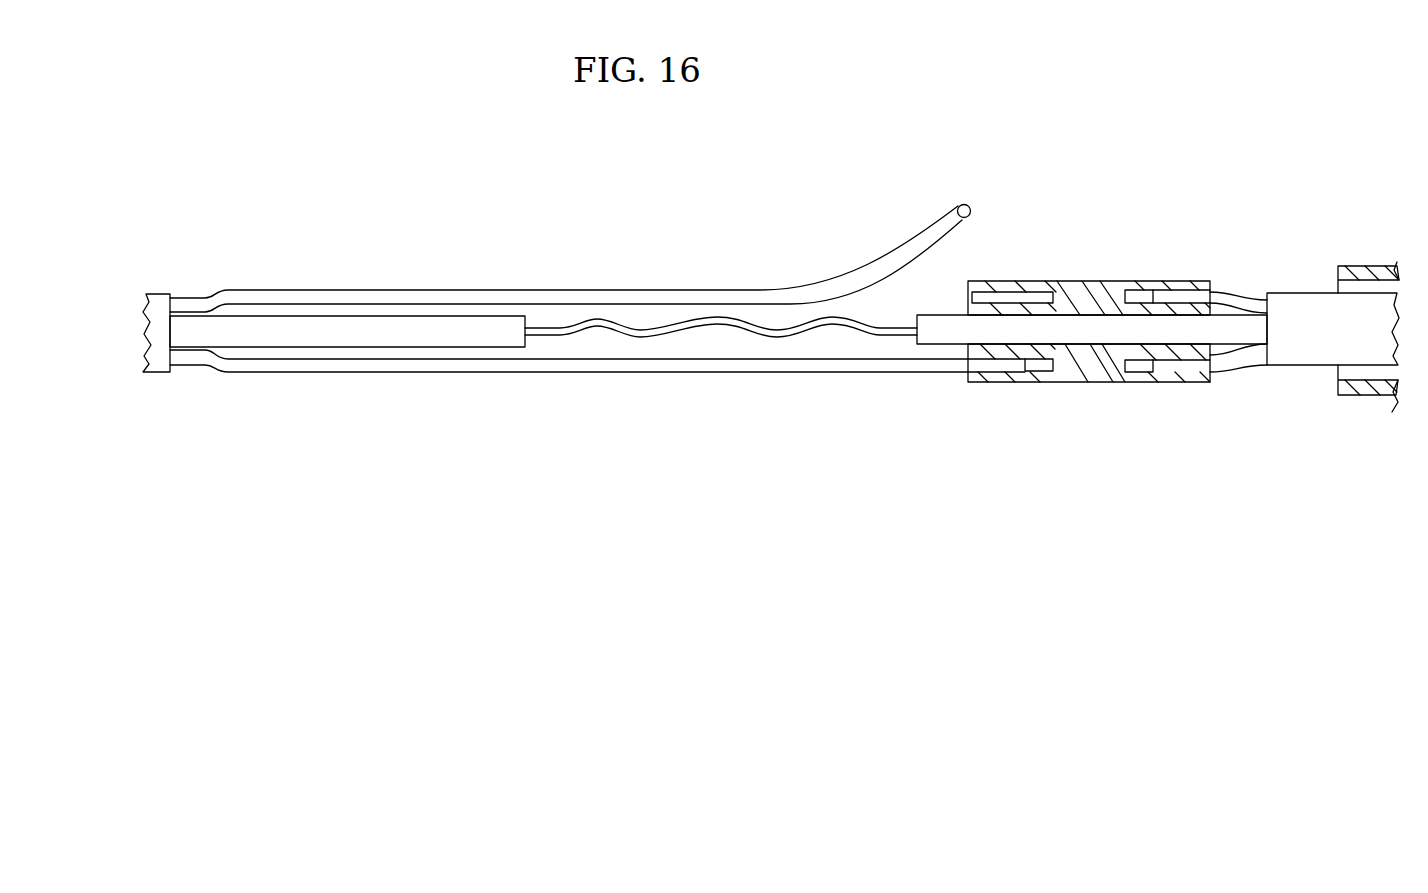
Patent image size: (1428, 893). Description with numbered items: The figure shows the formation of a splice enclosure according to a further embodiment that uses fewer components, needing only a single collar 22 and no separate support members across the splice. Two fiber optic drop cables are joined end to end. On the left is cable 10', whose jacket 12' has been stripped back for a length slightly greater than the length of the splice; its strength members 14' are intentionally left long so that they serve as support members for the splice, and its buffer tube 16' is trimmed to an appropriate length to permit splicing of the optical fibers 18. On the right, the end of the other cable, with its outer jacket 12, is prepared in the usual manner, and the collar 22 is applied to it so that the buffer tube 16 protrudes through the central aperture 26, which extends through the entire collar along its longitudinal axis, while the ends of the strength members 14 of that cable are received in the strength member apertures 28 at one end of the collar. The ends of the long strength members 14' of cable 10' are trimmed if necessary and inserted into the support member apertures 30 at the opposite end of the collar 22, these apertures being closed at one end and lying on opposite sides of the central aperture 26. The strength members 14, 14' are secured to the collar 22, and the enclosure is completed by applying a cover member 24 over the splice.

The cable 10' is at (174, 242).
The jacket 12' is at (162, 384).
The strength members 14' is at (597, 340).
The buffer tube 16' is at (347, 265).
The optical fibers 18 is at (719, 330).
The buffer tube 16 is at (1092, 269).
The collar 22 is at (1082, 382).
The central aperture 26 is at (1119, 352).
The strength member apertures 28 is at (1143, 296).
The support member apertures 30 is at (1040, 294).
The strength members 14 is at (1238, 310).
The outer jacket 12 is at (1333, 292).
The cover member 24 is at (1377, 265).